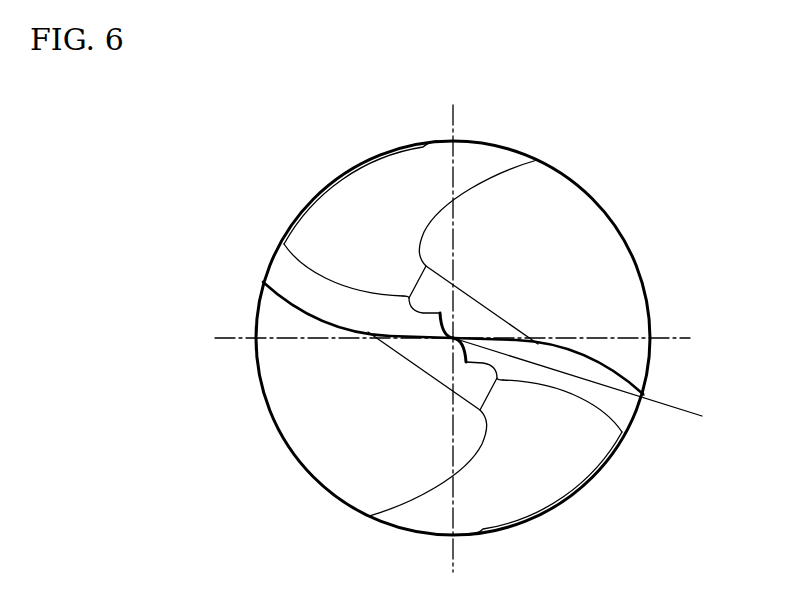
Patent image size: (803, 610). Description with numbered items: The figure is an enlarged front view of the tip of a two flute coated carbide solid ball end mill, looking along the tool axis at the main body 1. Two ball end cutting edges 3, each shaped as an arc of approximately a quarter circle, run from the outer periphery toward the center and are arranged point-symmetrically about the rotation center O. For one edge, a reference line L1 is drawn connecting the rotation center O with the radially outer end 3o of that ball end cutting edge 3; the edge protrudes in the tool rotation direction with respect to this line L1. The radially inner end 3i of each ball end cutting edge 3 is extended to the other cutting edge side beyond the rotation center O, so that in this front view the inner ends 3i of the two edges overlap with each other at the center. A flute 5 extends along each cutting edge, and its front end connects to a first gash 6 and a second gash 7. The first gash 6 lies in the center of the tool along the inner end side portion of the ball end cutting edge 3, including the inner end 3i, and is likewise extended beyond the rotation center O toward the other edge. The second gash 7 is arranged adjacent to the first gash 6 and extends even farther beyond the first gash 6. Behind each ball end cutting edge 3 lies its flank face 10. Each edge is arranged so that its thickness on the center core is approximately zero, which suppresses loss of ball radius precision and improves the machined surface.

The main body 1 is at (623, 228).
The ball end cutting edge 3 is at (288, 302).
The inner end 3i is at (455, 336).
The outer end 3o is at (644, 397).
The flute 5 is at (537, 203).
The first gash 6 is at (483, 326).
The second gash 7 is at (420, 296).
The flank face 10 is at (326, 308).
The line connecting rotation center and radially outer end L1 is at (595, 380).
The rotation center O is at (453, 338).